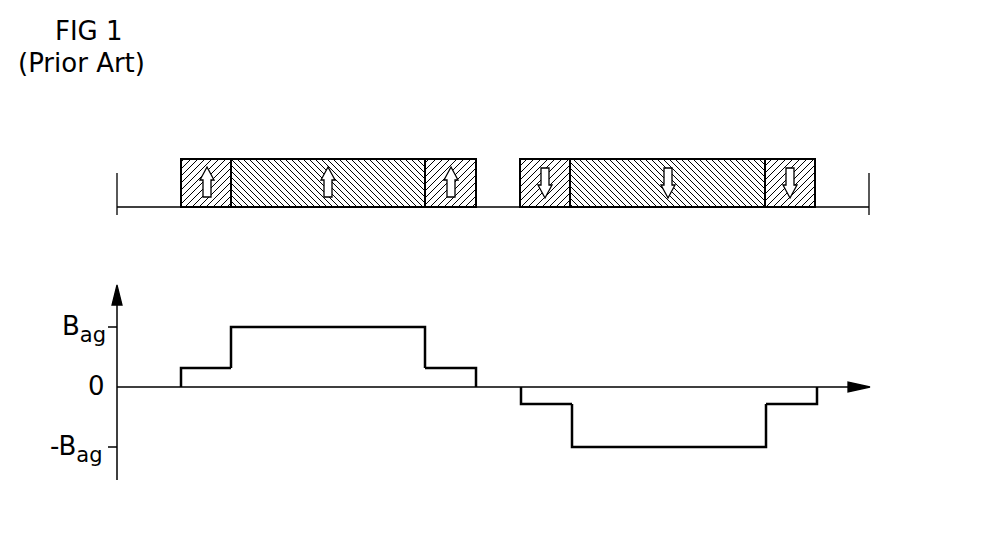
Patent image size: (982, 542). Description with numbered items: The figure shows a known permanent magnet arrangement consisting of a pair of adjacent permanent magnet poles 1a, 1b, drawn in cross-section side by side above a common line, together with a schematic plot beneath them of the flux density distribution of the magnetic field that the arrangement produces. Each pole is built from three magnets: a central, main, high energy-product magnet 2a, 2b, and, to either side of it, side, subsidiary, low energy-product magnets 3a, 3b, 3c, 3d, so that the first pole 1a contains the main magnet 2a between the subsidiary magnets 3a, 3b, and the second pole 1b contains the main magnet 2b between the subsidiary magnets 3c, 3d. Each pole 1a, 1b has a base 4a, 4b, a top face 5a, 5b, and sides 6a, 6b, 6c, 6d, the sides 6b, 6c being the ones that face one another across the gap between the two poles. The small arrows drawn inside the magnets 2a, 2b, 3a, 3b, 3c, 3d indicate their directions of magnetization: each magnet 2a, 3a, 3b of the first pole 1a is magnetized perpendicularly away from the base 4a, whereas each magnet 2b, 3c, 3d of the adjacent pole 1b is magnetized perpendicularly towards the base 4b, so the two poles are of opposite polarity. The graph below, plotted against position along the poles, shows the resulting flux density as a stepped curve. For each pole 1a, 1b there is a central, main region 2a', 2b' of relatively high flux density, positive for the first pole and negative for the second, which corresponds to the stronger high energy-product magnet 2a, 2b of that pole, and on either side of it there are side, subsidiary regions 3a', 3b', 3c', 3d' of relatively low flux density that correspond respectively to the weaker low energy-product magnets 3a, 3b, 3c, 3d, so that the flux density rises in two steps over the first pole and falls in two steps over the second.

The permanent magnet pole 1a is at (325, 95).
The permanent magnet pole 1b is at (665, 96).
The main high energy-product magnet 2a is at (328, 159).
The main high energy-product magnet 2b is at (667, 159).
The subsidiary low energy-product magnet 3a is at (211, 159).
The subsidiary low energy-product magnet 3b is at (450, 159).
The subsidiary low energy-product magnet 3c is at (550, 159).
The subsidiary low energy-product magnet 3d is at (790, 159).
The base 4a is at (366, 209).
The base 4b is at (704, 209).
The top face 5a is at (284, 160).
The top face 5b is at (624, 160).
The side 6a is at (181, 185).
The side 6b is at (478, 206).
The side 6c is at (520, 162).
The side 6d is at (815, 184).
The subsidiary region of flux density distribution 3a' is at (206, 351).
The main region of flux density distribution 2a' is at (328, 317).
The subsidiary region of flux density distribution 3b' is at (451, 351).
The subsidiary region of flux density distribution 3c' is at (546, 367).
The main region of flux density distribution 2b' is at (669, 455).
The subsidiary region of flux density distribution 3d' is at (793, 367).